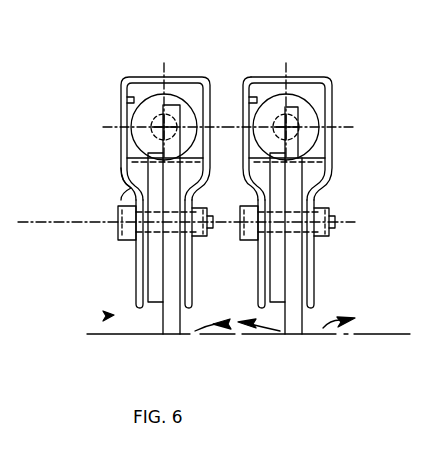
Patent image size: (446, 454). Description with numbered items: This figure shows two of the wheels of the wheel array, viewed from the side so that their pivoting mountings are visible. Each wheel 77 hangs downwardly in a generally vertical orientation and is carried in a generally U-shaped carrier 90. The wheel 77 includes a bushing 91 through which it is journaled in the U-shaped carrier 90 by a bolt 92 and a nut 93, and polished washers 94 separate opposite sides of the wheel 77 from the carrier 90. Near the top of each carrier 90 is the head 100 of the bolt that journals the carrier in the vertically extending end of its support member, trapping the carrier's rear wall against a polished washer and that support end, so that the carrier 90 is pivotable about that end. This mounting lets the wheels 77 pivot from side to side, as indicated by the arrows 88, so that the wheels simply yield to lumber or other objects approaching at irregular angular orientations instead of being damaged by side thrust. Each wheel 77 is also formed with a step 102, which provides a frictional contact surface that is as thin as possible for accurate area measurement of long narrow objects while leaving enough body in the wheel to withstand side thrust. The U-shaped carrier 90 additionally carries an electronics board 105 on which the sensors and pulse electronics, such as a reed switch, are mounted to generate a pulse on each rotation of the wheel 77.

The wheel 77 is at (171, 325).
The arrows 88 is at (105, 316).
The U-shaped carrier 90 is at (206, 98).
The bushing 91 is at (160, 240).
The bolt 92 is at (118, 208).
The nut 93 is at (208, 208).
The polished washers 94 is at (182, 206).
The head of bolt 100 is at (173, 99).
The step 102 is at (158, 298).
The electronics board 105 is at (131, 97).